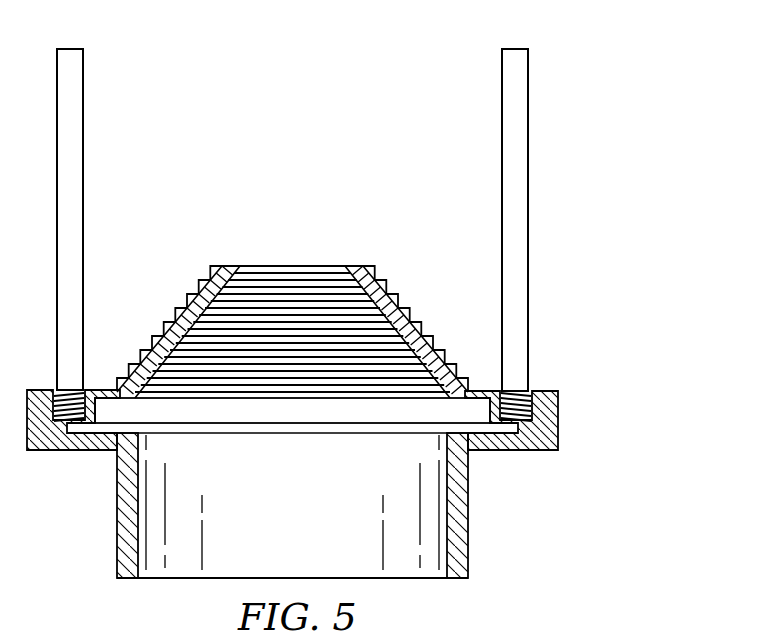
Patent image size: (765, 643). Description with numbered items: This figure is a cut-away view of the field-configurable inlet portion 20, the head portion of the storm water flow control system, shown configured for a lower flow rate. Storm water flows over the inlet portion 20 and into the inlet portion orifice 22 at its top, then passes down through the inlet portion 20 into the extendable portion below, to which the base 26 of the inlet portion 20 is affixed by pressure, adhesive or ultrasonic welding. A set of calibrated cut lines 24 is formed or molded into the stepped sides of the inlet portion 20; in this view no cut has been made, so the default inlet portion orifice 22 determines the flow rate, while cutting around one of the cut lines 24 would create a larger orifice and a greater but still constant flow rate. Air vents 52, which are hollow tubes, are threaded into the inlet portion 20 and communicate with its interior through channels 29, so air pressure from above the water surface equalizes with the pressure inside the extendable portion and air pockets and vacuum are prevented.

The field-configurable inlet portion 20 is at (605, 305).
The inlet portion orifice 22 is at (392, 233).
The calibrated cut lines 24 is at (368, 272).
The base 26 is at (295, 533).
The channels 29 is at (97, 428).
The air vents 52 is at (75, 121).